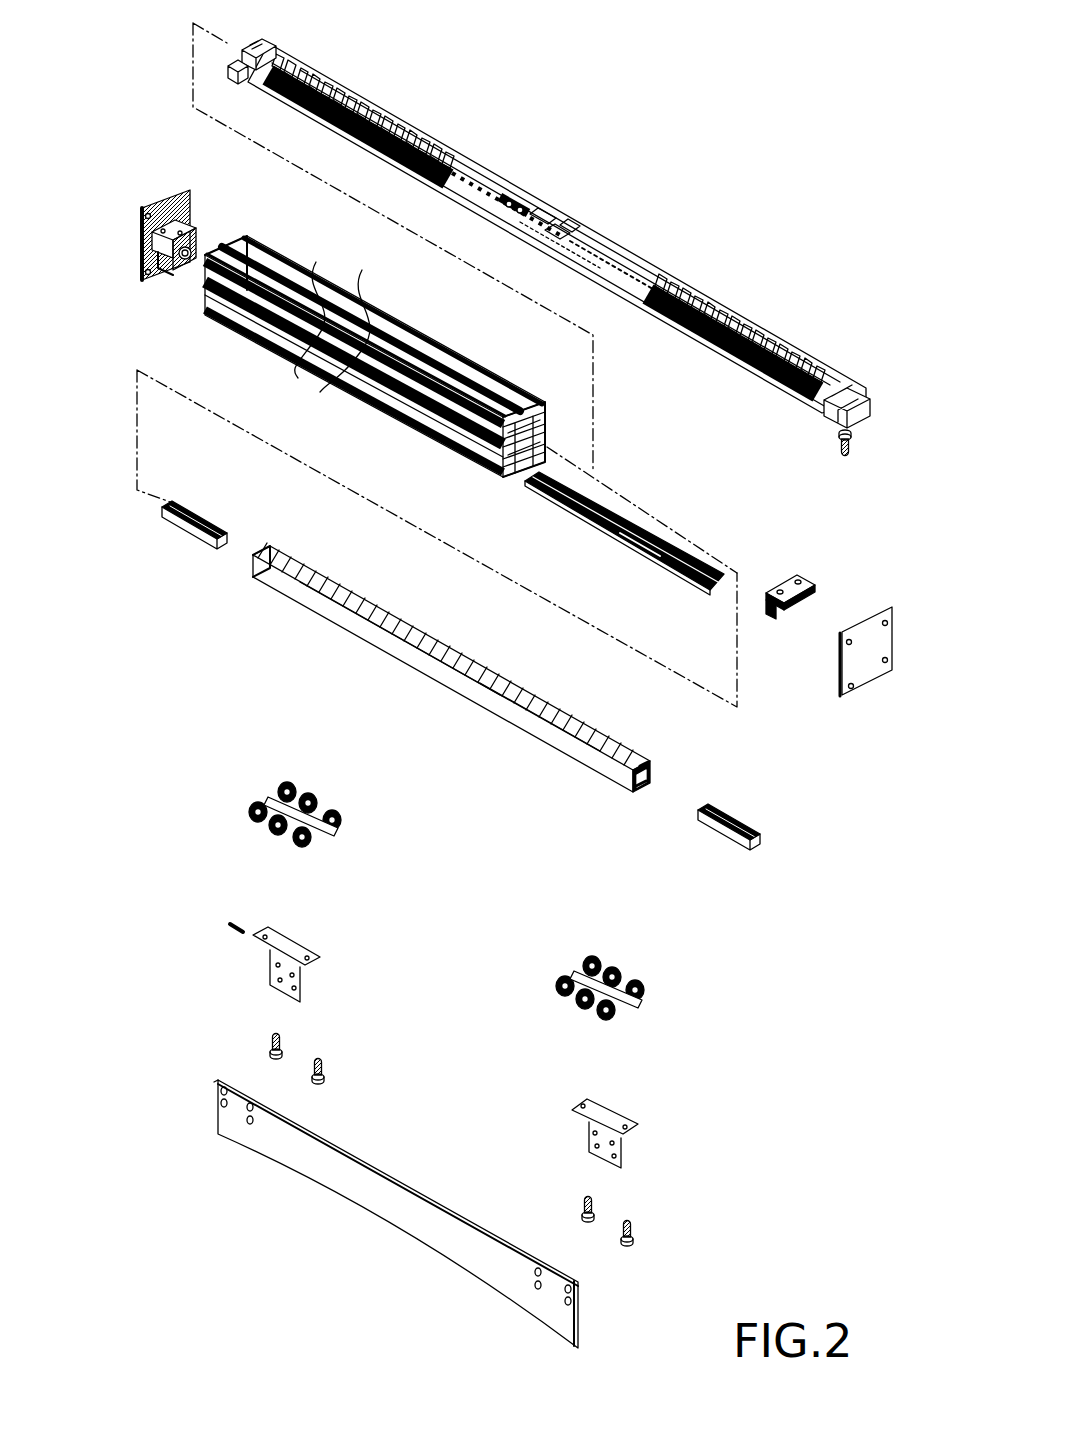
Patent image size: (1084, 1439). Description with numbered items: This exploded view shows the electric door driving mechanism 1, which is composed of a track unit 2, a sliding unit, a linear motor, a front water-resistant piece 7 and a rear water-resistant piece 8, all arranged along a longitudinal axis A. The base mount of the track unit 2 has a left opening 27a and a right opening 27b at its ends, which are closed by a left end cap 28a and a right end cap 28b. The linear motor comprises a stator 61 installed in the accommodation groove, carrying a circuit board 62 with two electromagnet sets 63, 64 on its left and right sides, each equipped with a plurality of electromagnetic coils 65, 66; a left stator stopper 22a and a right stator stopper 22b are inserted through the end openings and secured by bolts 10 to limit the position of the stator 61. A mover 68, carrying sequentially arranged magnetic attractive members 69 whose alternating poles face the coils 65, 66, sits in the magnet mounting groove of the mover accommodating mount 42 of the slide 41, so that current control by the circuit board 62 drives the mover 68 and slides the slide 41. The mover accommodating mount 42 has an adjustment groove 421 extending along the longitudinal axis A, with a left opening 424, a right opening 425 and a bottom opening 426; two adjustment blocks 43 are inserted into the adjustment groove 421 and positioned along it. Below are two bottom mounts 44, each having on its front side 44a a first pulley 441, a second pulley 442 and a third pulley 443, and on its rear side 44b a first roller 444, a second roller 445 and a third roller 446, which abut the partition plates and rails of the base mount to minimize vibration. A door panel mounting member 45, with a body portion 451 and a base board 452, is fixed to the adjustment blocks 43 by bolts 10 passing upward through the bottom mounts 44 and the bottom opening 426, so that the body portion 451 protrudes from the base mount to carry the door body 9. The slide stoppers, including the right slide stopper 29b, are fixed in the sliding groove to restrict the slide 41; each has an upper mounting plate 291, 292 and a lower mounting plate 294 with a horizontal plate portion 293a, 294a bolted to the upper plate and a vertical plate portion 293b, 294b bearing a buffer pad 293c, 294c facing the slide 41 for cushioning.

The electric door driving mechanism 1 is at (762, 108).
The track unit 2 is at (320, 252).
The front water-resistant piece 7 is at (692, 582).
The rear water-resistant piece 8 is at (700, 568).
The door body 9 is at (438, 1262).
The bolts 10 is at (855, 449).
The left stator stopper 22a is at (258, 45).
The right stator stopper 22b is at (850, 387).
The left opening 27a is at (233, 225).
The right opening 27b is at (562, 422).
The left end cap 28a is at (138, 237).
The right end cap 28b is at (890, 648).
The right slide stopper 29b is at (803, 711).
The upper mounting plate 291 is at (160, 212).
The upper mounting plate 292 is at (762, 613).
The horizontal plate portion 293a is at (142, 242).
The vertical plate portion 293b is at (178, 264).
The buffer pad 293c is at (188, 272).
The lower mounting plate 294 is at (824, 687).
The horizontal plate portion 294a is at (805, 614).
The vertical plate portion 294b is at (780, 617).
The buffer pad 294c is at (793, 614).
The slide 41 is at (508, 769).
The mover accommodating mount 42 is at (482, 753).
The adjustment groove 421 is at (614, 777).
The left opening 424 is at (234, 563).
The right opening 425 is at (672, 790).
The bottom opening 426 is at (643, 806).
The adjustment block 43 is at (172, 512).
The bottom mount 44 is at (663, 965).
The front side 44a is at (360, 851).
The rear side 44b is at (597, 966).
The first pulley 441 is at (249, 810).
The second pulley 442 is at (272, 832).
The third pulley 443 is at (300, 847).
The first roller 444 is at (287, 782).
The second roller 445 is at (310, 794).
The third roller 446 is at (341, 816).
The door panel mounting member 45 is at (471, 1050).
The body portion 451 is at (659, 1162).
The base board 452 is at (630, 1122).
The stator 61 is at (452, 35).
The circuit board 62 is at (584, 240).
The electromagnet set 63 is at (700, 278).
The electromagnet set 64 is at (424, 122).
The electromagnetic coils 65 is at (779, 340).
The electromagnetic coils 66 is at (444, 156).
The mover 68 is at (488, 724).
The magnetic attractive members 69 is at (567, 745).
The longitudinal axis A is at (582, 464).